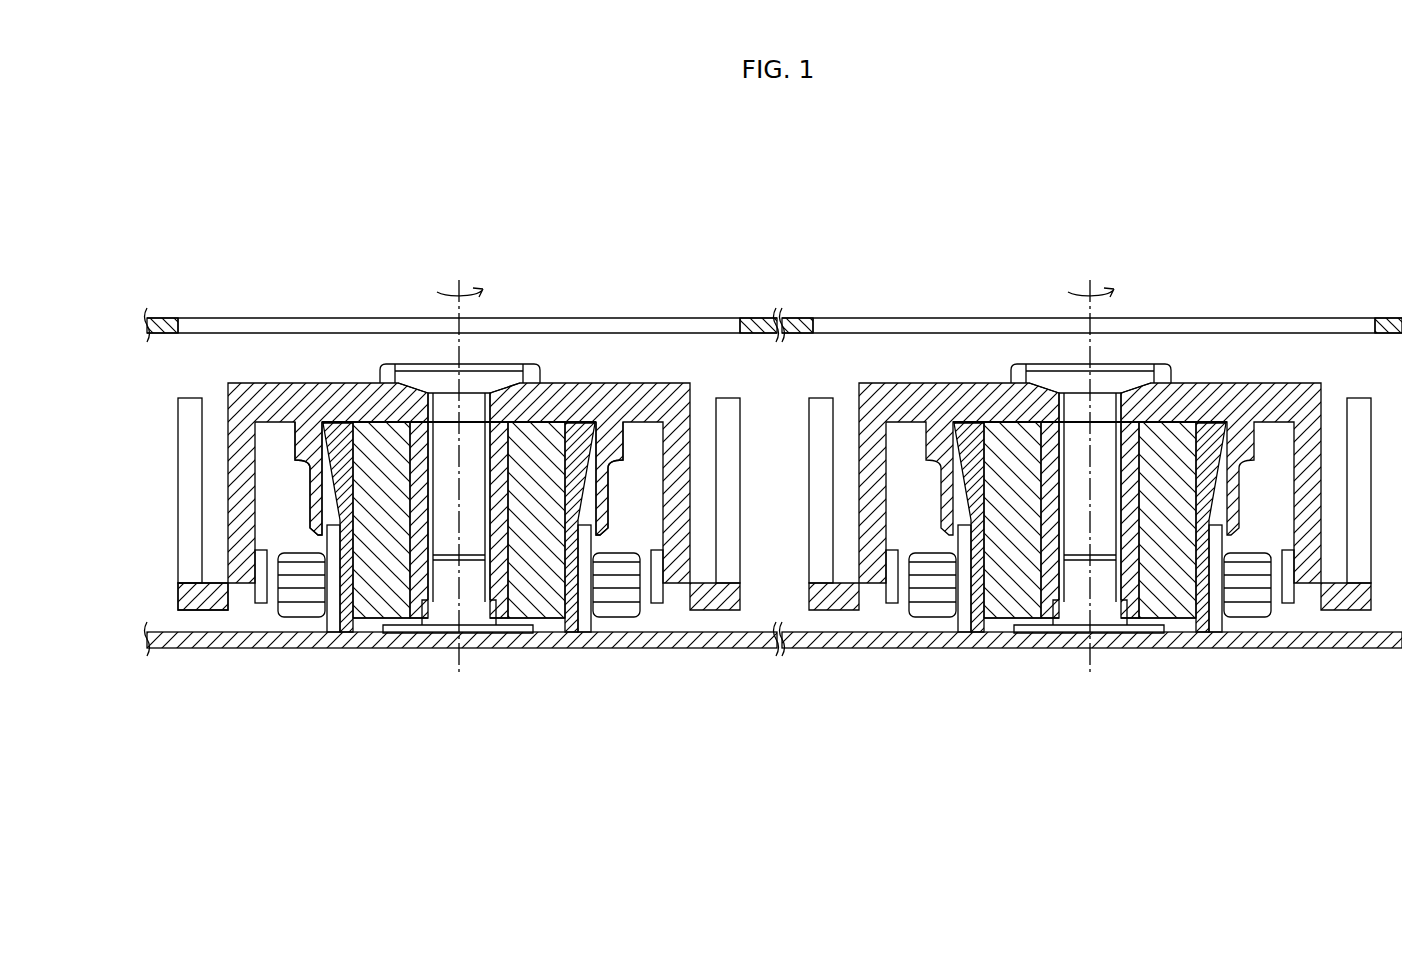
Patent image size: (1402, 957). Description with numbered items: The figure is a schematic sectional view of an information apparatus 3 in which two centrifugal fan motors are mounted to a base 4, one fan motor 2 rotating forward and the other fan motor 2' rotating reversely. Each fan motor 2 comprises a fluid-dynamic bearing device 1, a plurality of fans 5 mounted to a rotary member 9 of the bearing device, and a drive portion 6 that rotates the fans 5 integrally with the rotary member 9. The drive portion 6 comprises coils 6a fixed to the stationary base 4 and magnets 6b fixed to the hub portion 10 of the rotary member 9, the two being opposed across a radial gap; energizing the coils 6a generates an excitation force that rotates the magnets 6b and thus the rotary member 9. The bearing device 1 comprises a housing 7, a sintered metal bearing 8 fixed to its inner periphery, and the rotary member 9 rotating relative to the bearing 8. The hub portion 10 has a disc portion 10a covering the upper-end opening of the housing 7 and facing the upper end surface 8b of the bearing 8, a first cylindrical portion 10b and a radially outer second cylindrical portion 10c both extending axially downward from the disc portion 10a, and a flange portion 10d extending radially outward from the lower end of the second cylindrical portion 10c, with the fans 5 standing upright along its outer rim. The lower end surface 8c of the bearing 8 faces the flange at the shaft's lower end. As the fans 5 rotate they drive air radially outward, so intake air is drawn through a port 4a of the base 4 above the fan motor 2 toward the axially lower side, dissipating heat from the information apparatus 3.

The fluid-dynamic bearing device 1 is at (438, 669).
The fan motor 2 is at (462, 305).
The fan motor 2' is at (1091, 294).
The information apparatus 3 is at (561, 222).
The base 4 is at (822, 650).
The port 4a is at (184, 322).
The fans 5 is at (185, 493).
The drive portion 6 is at (637, 648).
The coils 6a is at (617, 612).
The magnets 6b is at (657, 605).
The housing 7 is at (310, 535).
The sintered metal bearing 8 is at (540, 578).
The upper end surface 8b is at (362, 420).
The lower end surface 8c is at (376, 625).
The rotary member 9 is at (538, 348).
The hub portion 10 is at (291, 371).
The disc portion 10a is at (592, 370).
The first cylindrical portion 10b is at (622, 443).
The second cylindrical portion 10c is at (250, 522).
The flange portion 10d is at (198, 603).